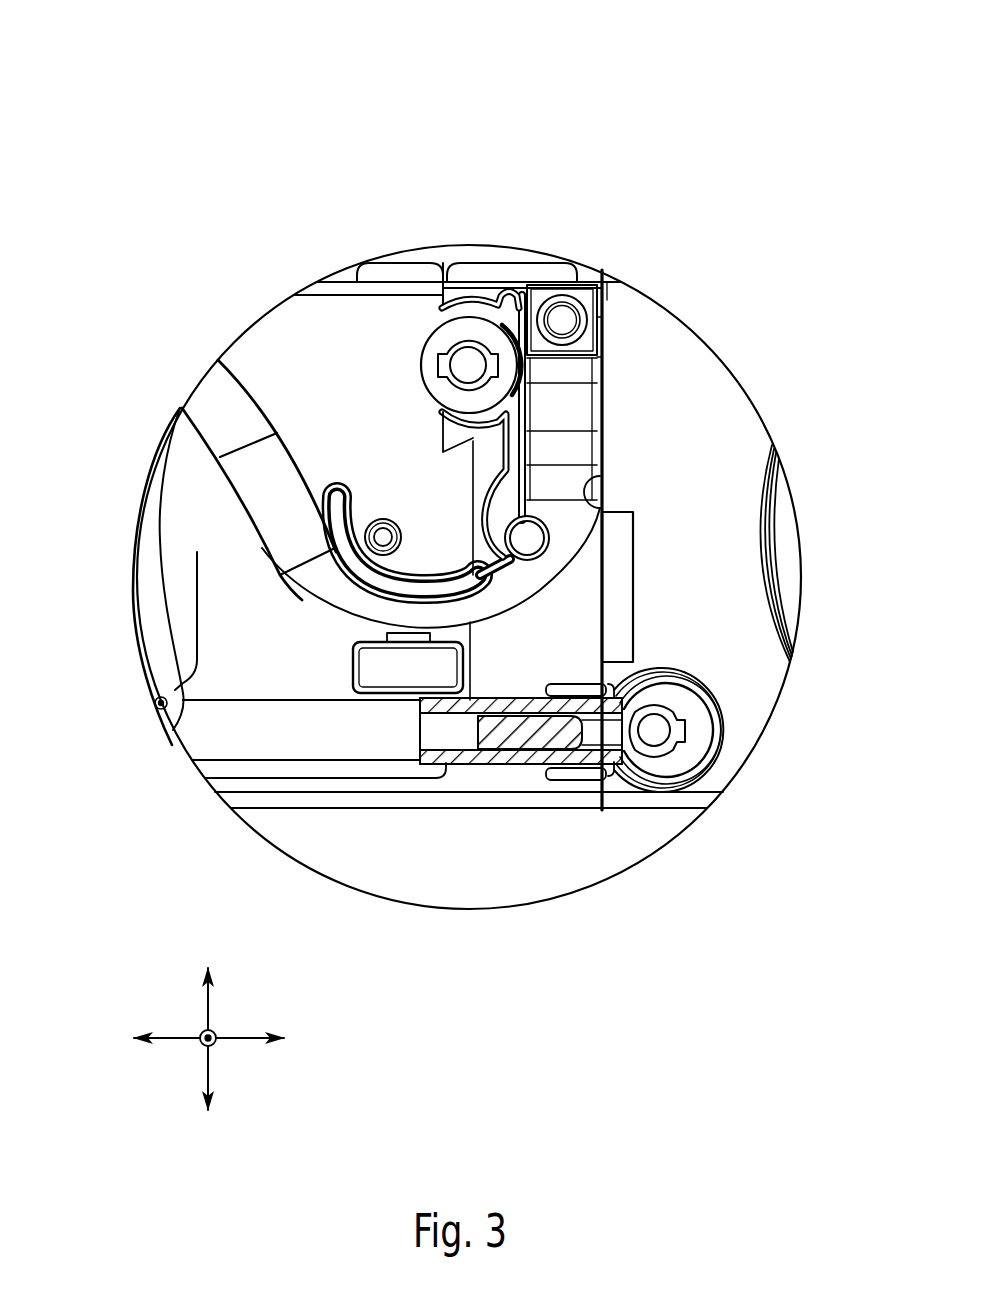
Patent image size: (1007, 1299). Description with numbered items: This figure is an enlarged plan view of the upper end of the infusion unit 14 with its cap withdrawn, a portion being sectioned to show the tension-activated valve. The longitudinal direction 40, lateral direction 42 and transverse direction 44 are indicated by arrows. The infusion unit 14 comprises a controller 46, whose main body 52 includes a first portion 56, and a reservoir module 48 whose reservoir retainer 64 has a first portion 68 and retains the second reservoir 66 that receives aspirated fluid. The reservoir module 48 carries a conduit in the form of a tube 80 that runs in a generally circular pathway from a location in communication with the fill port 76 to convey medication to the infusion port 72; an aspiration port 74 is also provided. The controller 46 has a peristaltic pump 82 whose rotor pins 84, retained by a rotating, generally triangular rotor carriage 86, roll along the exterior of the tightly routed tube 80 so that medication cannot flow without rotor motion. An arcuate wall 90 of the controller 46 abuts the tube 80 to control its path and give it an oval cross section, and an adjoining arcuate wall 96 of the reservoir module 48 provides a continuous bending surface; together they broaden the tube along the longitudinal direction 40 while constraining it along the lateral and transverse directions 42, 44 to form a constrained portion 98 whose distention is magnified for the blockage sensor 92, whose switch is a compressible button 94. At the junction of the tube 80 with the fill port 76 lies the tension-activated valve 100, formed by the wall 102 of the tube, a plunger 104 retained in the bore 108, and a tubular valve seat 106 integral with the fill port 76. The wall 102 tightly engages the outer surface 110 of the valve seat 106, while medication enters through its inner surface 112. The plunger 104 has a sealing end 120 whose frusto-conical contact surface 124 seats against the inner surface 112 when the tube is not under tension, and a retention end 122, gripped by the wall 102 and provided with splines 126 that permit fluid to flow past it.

The infusion unit 14 is at (432, 128).
The longitudinal direction 40 is at (218, 1045).
The lateral direction 42 is at (242, 1038).
The transverse direction 44 is at (208, 995).
The controller 46 is at (218, 243).
The reservoir module 48 is at (742, 334).
The main body 52 is at (276, 272).
The first portion 56 is at (335, 330).
The reservoir retainer 64 is at (513, 250).
The second reservoir 66 is at (783, 546).
The first portion 68 is at (657, 343).
The infusion port 72 is at (562, 345).
The aspiration port 74 is at (430, 360).
The fill port 76 is at (726, 778).
The tube 80 is at (278, 402).
The pump 82 is at (121, 575).
The rotor pins 84 is at (197, 556).
The rotor carriage 86 is at (152, 527).
The arcuate wall 90 is at (392, 588).
The blockage sensor 92 is at (334, 668).
The button 94 is at (375, 675).
The arcuate wall 96 is at (487, 507).
The constrained portion 98 is at (345, 607).
The tension-activated valve 100 is at (498, 784).
The wall 102 is at (457, 764).
The plunger 104 is at (462, 733).
The valve seat 106 is at (590, 688).
The bore 108 is at (450, 760).
The outer surface 110 is at (640, 700).
The inner surface 112 is at (531, 766).
The sealing end 120 is at (606, 729).
The retention end 122 is at (511, 696).
The contact surface 124 is at (598, 764).
The splines 126 is at (548, 700).